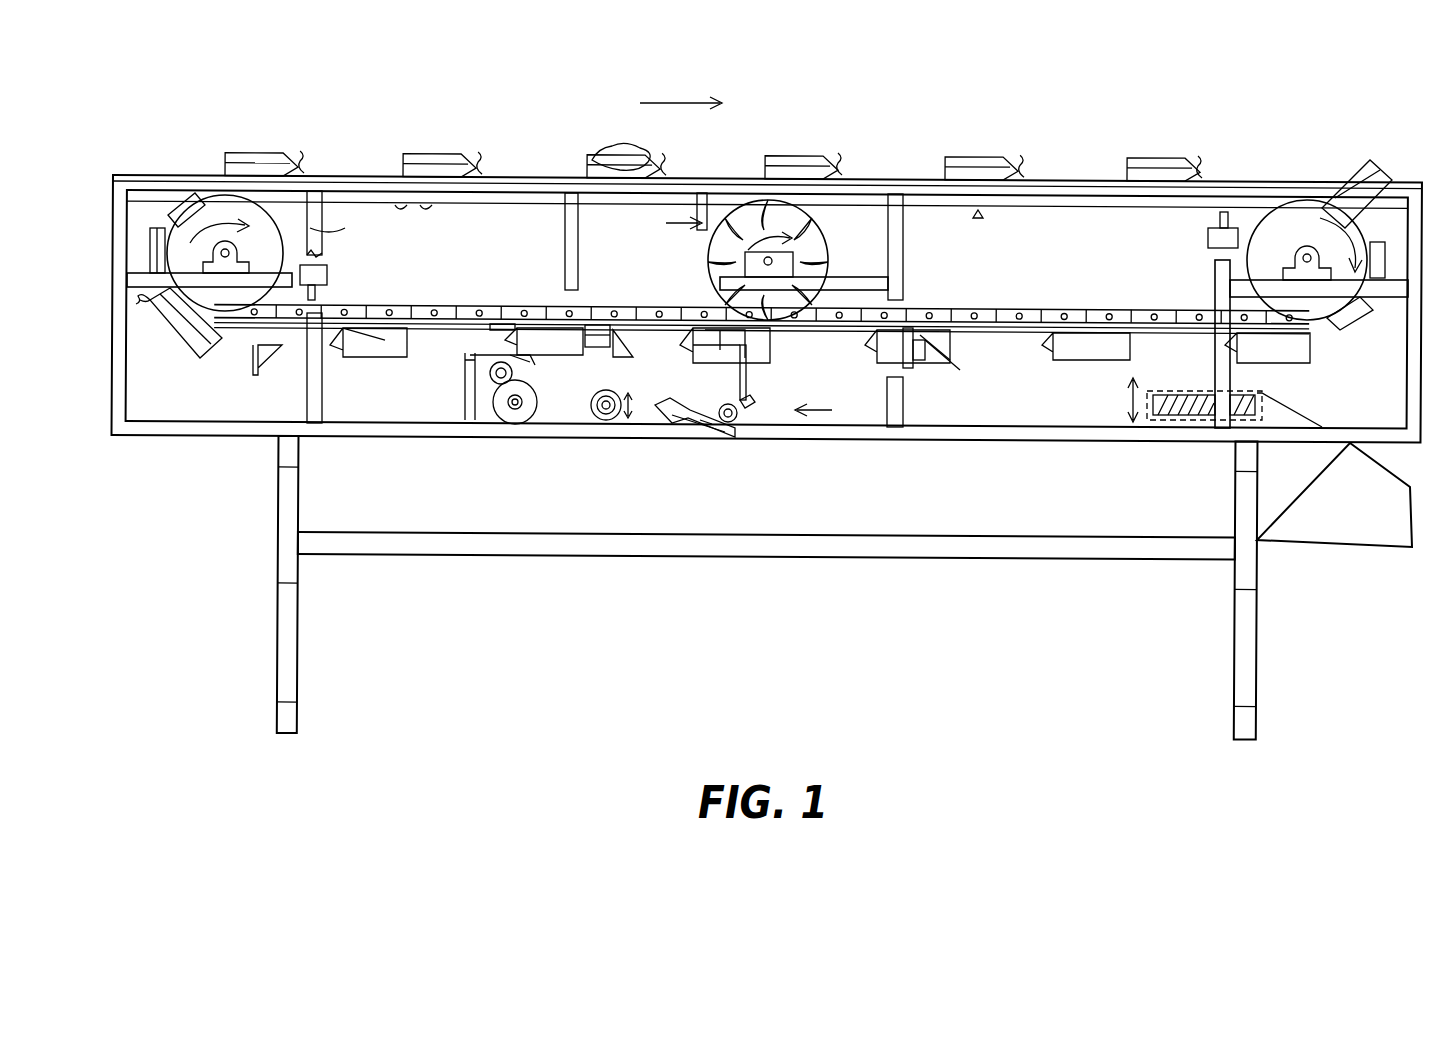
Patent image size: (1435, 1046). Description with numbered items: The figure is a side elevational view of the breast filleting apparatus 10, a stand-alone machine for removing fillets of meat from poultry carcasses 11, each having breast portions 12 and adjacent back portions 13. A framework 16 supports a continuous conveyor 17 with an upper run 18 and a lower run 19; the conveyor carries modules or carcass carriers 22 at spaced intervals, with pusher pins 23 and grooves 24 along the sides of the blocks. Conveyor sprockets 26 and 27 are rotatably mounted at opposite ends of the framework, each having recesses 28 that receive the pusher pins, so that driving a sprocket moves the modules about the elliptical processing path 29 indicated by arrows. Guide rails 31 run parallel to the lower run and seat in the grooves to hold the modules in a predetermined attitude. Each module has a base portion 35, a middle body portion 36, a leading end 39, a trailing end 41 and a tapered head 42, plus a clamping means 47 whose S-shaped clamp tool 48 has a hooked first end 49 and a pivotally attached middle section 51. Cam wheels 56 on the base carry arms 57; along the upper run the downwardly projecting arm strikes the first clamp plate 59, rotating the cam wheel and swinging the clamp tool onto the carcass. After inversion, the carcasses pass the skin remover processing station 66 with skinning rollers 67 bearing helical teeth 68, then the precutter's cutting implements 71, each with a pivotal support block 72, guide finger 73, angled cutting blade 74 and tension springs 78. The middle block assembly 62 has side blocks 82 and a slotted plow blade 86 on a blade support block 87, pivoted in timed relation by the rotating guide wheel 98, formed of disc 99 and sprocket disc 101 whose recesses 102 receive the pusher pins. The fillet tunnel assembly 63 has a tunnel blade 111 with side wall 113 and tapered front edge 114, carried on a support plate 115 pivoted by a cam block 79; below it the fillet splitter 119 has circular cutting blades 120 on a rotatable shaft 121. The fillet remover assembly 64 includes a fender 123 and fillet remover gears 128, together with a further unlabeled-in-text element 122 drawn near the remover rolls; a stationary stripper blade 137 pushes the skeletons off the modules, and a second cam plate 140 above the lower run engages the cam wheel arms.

The breast filleting apparatus 10 is at (848, 620).
The poultry carcasses 11 is at (616, 131).
The breast portions 12 is at (639, 148).
The back portions 13 is at (590, 160).
The framework 16 is at (342, 435).
The continuous conveyor 17 is at (388, 280).
The upper run 18 is at (395, 205).
The lower run 19 is at (500, 305).
The modules or carcass carriers 22 is at (795, 152).
The pusher pins 23 is at (178, 290).
The grooves or slots 24 is at (170, 337).
The conveyor sprocket 26 is at (1306, 235).
The conveyor sprocket 27 is at (278, 262).
The recesses 28 is at (310, 262).
The processing path 29 is at (660, 223).
The guide rails 31 is at (385, 328).
The base portion 35 is at (865, 162).
The middle body portion 36 is at (712, 178).
The leading or front end 39 is at (1205, 175).
The trailing or rear end 41 is at (1128, 171).
The tapered top portion or head 42 is at (800, 160).
The clamping means 47 is at (826, 145).
The clamp tool 48 is at (848, 165).
The hooked first end 49 is at (842, 160).
The middle section 51 is at (1203, 168).
The cam wheels 56 is at (978, 218).
The cam protrusions or arms 57 is at (982, 215).
The first clamp plate 59 is at (1218, 222).
The middle block assembly 62 is at (775, 355).
The fillet tunnel assembly 63 is at (585, 415).
The fillet remover assembly 64 is at (455, 380).
The processing station 66 is at (1172, 519).
The skinning rollers 67 is at (1190, 418).
The teeth 68 is at (1187, 392).
The cutting implements 71 is at (932, 365).
The support block 72 is at (910, 368).
The elongated guide finger 73 is at (962, 365).
The angled cutting blade 74 is at (945, 362).
The tension springs 78 is at (920, 362).
The cam block 79 is at (490, 326).
The side blocks 82 is at (746, 360).
The slotted plow blade 86 is at (682, 420).
The blade support block 87 is at (735, 422).
The guide wheel 98 is at (735, 200).
The disc 99 is at (820, 215).
The second disc 101 is at (802, 240).
The recesses or gaps 102 is at (798, 270).
The tunnel blade 111 is at (603, 355).
The side wall 113 is at (580, 345).
The tapered inwardly facing front edge 114 is at (658, 345).
The support plate 115 is at (598, 325).
The fillet splitter 119 is at (596, 395).
The circular cutting blades or discs 120 is at (618, 422).
The rotatable shaft 121 is at (598, 420).
The roller 122 is at (515, 420).
The fender 123 is at (517, 425).
The fillet remover gears 128 is at (465, 375).
The stripper blade 137 is at (278, 370).
The second cam plate 140 is at (318, 292).